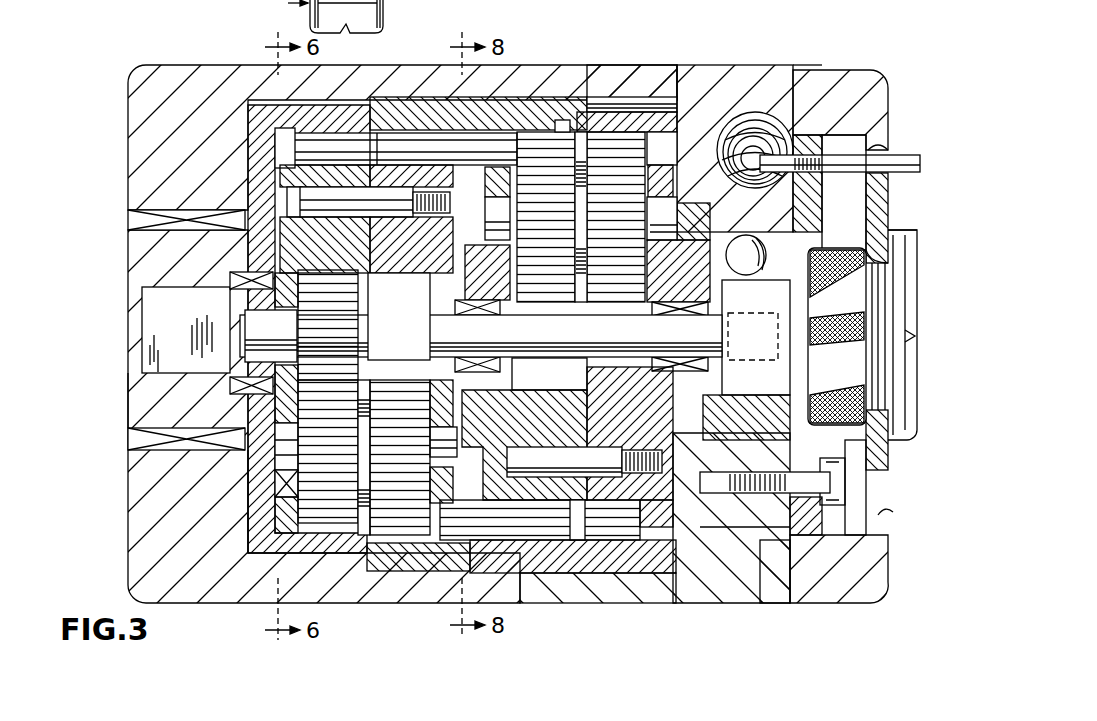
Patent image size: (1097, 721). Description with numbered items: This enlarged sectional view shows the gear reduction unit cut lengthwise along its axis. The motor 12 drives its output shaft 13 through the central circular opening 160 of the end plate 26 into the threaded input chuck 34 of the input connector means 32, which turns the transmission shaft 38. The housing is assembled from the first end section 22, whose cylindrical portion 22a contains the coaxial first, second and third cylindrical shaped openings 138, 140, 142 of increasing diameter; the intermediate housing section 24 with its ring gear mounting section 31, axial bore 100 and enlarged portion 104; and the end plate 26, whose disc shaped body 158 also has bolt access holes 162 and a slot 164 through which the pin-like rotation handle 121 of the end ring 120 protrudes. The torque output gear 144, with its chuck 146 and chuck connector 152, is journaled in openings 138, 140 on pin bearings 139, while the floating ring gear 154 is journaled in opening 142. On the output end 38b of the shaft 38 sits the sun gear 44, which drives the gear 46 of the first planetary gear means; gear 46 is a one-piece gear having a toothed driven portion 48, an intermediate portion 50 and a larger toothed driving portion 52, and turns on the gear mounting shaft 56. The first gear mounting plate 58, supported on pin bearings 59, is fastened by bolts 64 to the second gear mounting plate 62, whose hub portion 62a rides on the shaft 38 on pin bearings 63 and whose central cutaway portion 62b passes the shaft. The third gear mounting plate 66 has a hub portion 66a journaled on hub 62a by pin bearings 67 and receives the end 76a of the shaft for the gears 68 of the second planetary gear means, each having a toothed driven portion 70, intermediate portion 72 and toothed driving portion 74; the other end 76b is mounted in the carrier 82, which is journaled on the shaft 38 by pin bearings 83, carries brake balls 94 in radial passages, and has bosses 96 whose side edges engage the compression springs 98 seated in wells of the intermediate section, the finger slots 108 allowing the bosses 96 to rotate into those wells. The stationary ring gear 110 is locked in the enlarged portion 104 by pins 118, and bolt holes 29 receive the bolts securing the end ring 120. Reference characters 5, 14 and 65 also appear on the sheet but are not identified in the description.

The section line 5 is at (289, 8).
The bolt 14 is at (385, 8).
The first end section 22 is at (177, 60).
The cylindrical portion 22a is at (150, 148).
The intermediate housing section 24 is at (719, 60).
The end plate 26 is at (807, 58).
The bolt holes 29 is at (748, 495).
The ring gear mounting section 31 is at (637, 72).
The input connector means 32 is at (824, 370).
The input chuck 34 is at (843, 247).
The transmission shaft 38 is at (550, 336).
The output end 38b is at (255, 337).
The sun gear 44 is at (326, 290).
The gear 46 is at (413, 548).
The toothed driven portion 48 is at (322, 500).
The intermediate portion 50 is at (360, 527).
The toothed driving portion 52 is at (392, 571).
The gear mounting shaft 56 is at (250, 470).
The first gear mounting plate 58 is at (290, 168).
The pin bearings 59 is at (240, 292).
The second gear mounting plate 62 is at (400, 150).
The hub portion 62a is at (490, 305).
The central cutaway portion 62b is at (410, 275).
The pin bearings 63 is at (468, 357).
The bolts 64 is at (285, 198).
The lower shaft 65 is at (598, 478).
The third gear mounting plate 66 is at (547, 500).
The hub portion 66a is at (549, 374).
The pin bearings 67 is at (422, 270).
The gears 68 is at (564, 120).
The toothed driven portion 70 is at (543, 165).
The intermediate portion 72 is at (581, 300).
The toothed driving portion 74 is at (600, 150).
The gear shaft end 76a is at (485, 215).
The gear shaft end 76b is at (678, 210).
The carrier 82 is at (656, 412).
The pin bearings 83 is at (682, 312).
The balls 94 is at (752, 272).
The boss 96 is at (708, 528).
The compression spring 98 is at (752, 112).
The axial bore 100 is at (758, 150).
The enlarged portion 104 is at (638, 573).
The finger slots 108 is at (776, 560).
The stationary ring gear 110 is at (584, 540).
The pins 118 is at (660, 100).
The end ring 120 is at (814, 545).
The rotation handle 121 is at (843, 175).
The first cylindrical shaped opening 138 is at (128, 220).
The pin bearings 139 is at (128, 440).
The second cylindrical shaped opening 140 is at (268, 105).
The third cylindrical shaped opening 142 is at (430, 97).
The torque output gear 144 is at (238, 510).
The chuck 146 is at (128, 390).
The chuck connector 152 is at (153, 318).
The floating ring gear 154 is at (468, 580).
The disc shaped body 158 is at (840, 100).
The central circular opening 160 is at (897, 232).
The bolt access holes 162 is at (893, 510).
The slot 164 is at (887, 150).
The motor 12 is at (904, 442).
The output shaft 13 is at (888, 308).